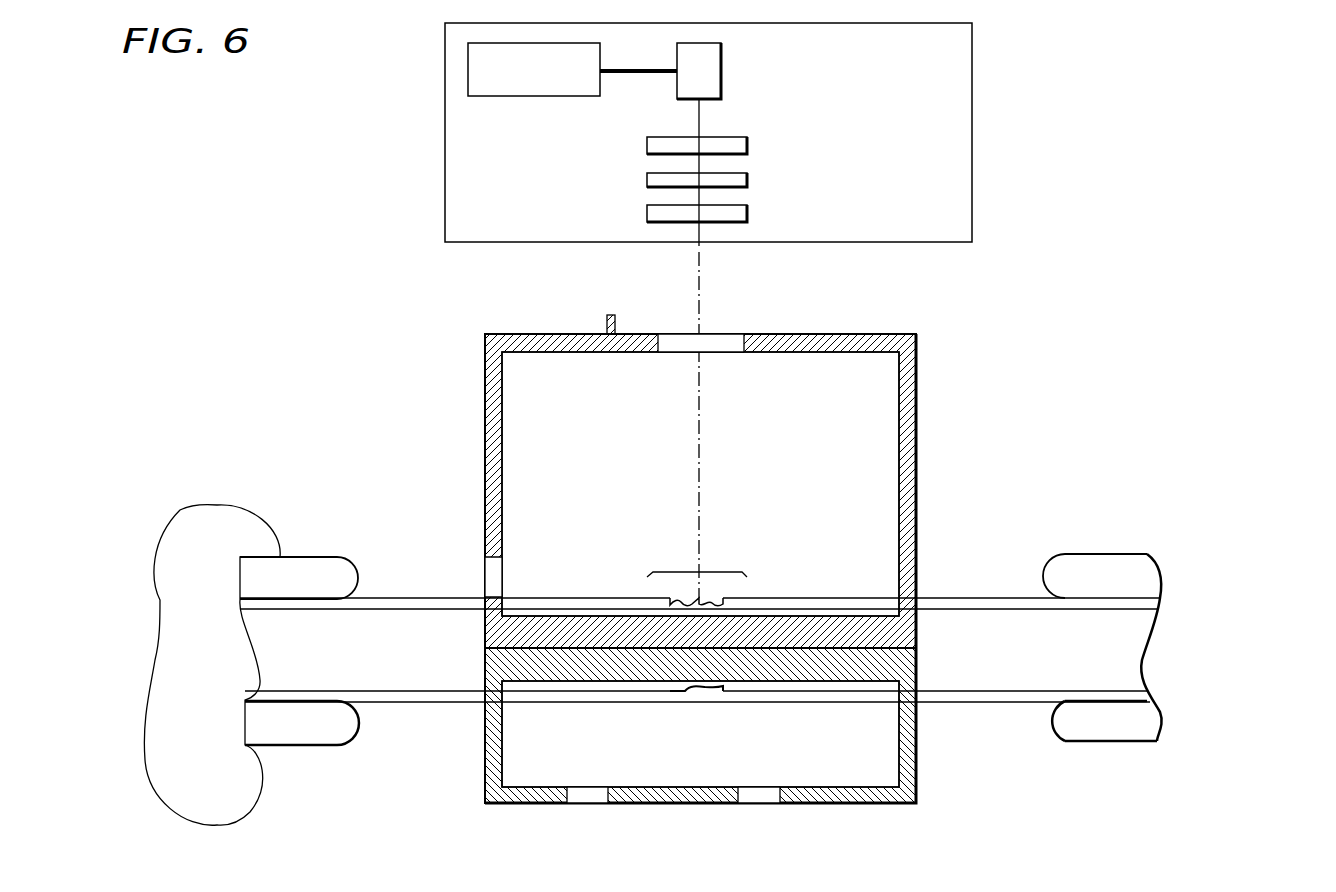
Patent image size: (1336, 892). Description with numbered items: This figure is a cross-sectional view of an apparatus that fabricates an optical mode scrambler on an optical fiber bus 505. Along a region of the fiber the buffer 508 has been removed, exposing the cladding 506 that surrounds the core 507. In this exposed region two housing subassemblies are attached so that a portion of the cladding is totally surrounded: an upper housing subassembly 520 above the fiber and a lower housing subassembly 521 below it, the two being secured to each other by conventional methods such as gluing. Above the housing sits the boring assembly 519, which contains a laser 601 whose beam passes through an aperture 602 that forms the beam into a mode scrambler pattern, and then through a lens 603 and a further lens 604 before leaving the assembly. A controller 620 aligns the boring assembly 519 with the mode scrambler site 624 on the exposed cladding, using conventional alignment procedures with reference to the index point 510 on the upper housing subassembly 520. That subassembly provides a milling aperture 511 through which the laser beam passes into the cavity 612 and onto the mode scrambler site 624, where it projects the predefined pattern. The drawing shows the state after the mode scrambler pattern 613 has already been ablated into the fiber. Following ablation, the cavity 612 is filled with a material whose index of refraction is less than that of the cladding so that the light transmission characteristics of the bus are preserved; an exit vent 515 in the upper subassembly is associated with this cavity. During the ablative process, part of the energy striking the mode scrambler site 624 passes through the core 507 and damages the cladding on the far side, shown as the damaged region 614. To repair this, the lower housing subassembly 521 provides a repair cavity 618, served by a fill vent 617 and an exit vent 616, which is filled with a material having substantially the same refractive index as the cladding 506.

The boring assembly 519 is at (972, 80).
The controller 620 is at (575, 97).
The laser 601 is at (724, 62).
The aperture 602 is at (748, 138).
The lens 603 is at (748, 175).
The lens 604 is at (748, 212).
The index point 510 is at (607, 318).
The milling aperture 511 is at (718, 343).
The cavity 612 is at (857, 402).
The housing subassembly 520 is at (917, 428).
The mode scrambler site 624 is at (708, 572).
The mode scrambler pattern 613 is at (705, 592).
The exit vent 515 is at (485, 583).
The optical fiber bus 505 is at (123, 660).
The buffer 508 is at (1148, 556).
The cladding 506 is at (1163, 598).
The core 507 is at (1148, 658).
The housing subassembly 521 is at (917, 756).
The damaged region 614 is at (693, 697).
The exit vent 616 is at (600, 795).
The fill vent 617 is at (752, 795).
The repair cavity 618 is at (855, 770).